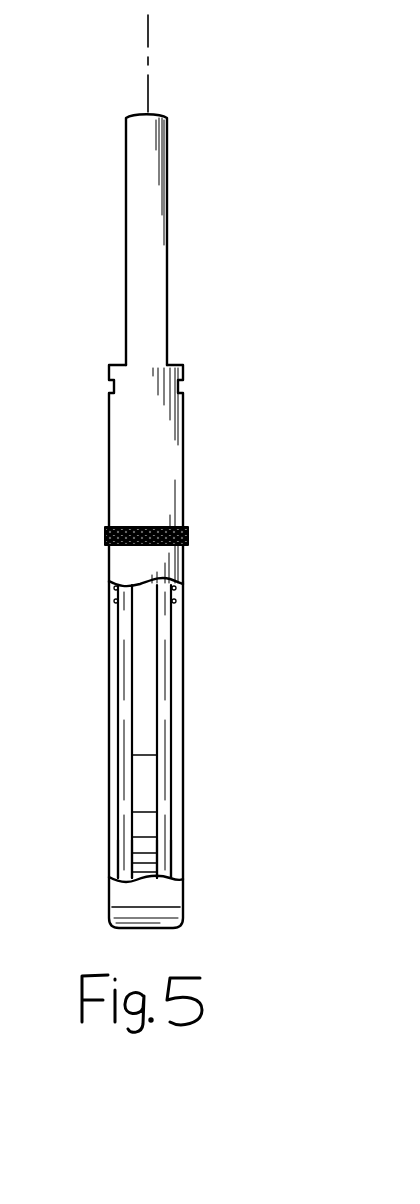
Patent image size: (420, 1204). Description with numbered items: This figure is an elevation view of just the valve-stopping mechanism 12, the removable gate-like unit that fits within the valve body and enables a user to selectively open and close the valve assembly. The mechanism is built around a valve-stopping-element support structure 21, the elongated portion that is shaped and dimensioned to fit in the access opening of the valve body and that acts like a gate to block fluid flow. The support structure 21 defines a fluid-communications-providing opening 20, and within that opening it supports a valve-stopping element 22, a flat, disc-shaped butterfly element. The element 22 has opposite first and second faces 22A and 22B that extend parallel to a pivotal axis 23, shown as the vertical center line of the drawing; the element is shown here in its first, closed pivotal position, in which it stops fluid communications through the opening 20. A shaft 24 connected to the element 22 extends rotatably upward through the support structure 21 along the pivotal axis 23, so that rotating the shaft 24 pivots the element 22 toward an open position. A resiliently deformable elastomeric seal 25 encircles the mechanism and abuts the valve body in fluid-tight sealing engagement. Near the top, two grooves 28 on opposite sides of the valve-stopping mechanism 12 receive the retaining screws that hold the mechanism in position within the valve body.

The valve-stopping mechanism 12 is at (127, 115).
The fluid-communications-providing opening 20 is at (116, 714).
The valve-stopping-element support structure 21 is at (121, 567).
The valve-stopping element 22 is at (125, 629).
The first face 22A is at (117, 857).
The second face 22B is at (175, 857).
The pivotal axis 23 is at (144, 29).
The shaft 24 is at (168, 118).
The elastomeric seal 25 is at (110, 528).
The grooves 28 is at (110, 389).